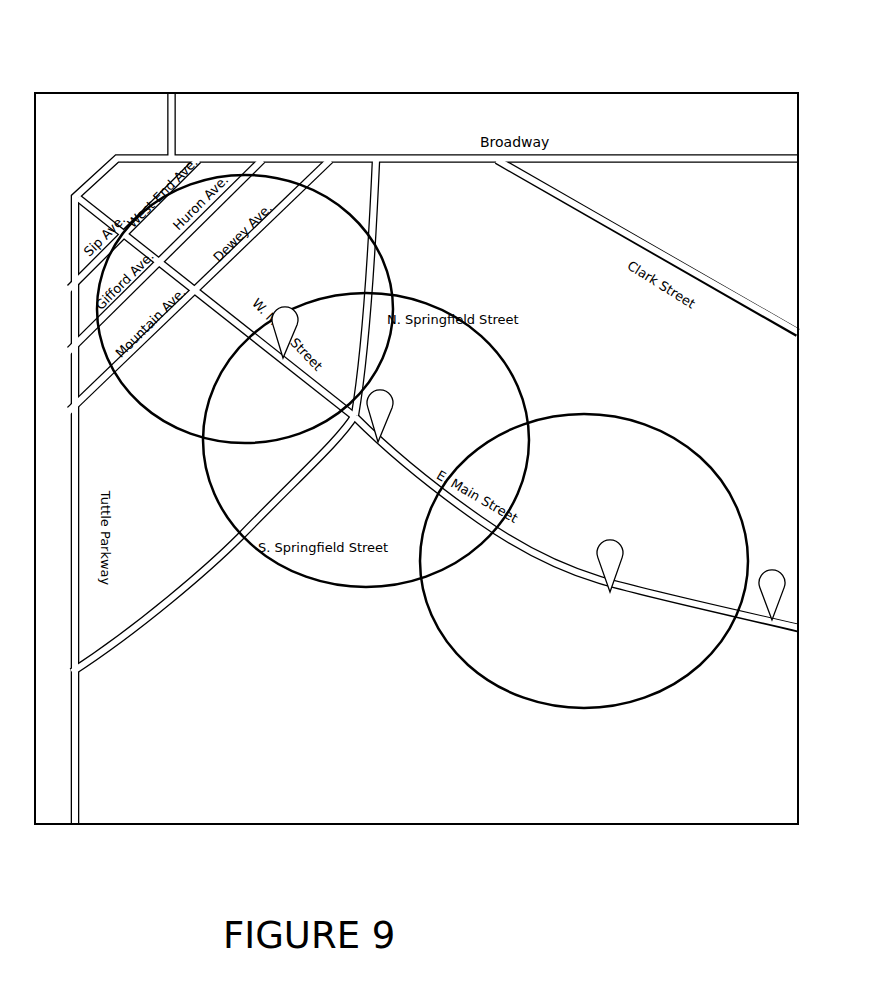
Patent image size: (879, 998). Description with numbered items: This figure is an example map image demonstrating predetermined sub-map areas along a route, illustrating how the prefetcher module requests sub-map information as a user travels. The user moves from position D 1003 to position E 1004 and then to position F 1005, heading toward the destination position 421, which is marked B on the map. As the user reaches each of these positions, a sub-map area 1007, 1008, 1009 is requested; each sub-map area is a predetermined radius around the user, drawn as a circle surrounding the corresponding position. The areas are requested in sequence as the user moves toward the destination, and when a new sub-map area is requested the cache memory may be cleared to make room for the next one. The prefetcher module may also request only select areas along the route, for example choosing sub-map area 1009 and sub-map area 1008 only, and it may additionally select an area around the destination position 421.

The position D 1003 is at (268, 176).
The sub-map area 1007 is at (287, 307).
The position E 1004 is at (390, 388).
The sub-map area 1008 is at (493, 347).
The sub-map area 1009 is at (605, 415).
The position F 1005 is at (610, 592).
The destination position 421 is at (770, 612).